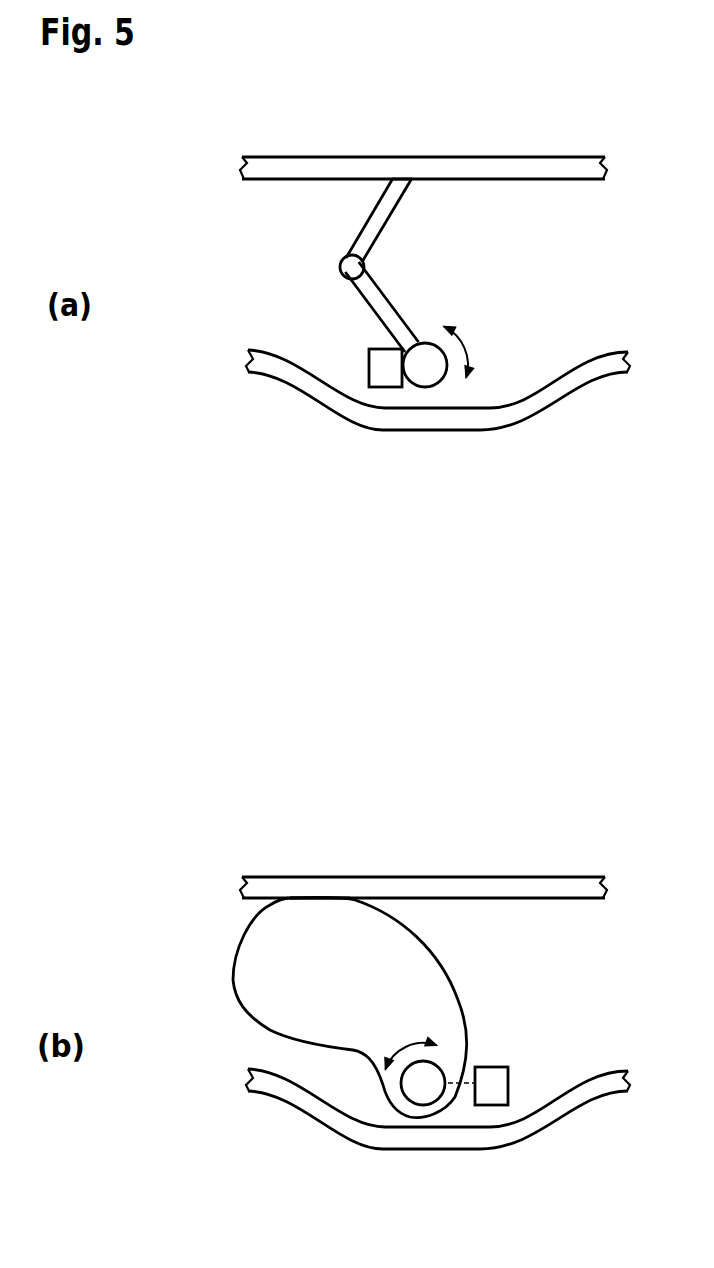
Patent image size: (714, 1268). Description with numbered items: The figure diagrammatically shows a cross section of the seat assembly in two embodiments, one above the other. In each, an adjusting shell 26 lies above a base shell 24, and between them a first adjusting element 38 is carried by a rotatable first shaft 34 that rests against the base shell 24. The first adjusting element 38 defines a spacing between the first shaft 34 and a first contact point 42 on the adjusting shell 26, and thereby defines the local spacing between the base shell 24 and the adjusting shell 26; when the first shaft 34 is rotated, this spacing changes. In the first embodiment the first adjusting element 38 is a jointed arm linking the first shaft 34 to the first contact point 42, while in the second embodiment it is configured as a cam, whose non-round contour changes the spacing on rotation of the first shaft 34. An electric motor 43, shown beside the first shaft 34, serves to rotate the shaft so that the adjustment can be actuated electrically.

In FIG. 5a, the base shell 24 is at (310, 378).
In FIG. 5b, the base shell 24 is at (310, 1097).
In FIG. 5a, the adjusting shell 26 is at (588, 163).
In FIG. 5b, the adjusting shell 26 is at (588, 883).
In FIG. 5a, the first shaft 34 is at (425, 375).
In FIG. 5b, the first shaft 34 is at (423, 1095).
In FIG. 5a, the first adjusting element 38 is at (372, 228).
In FIG. 5b, the first adjusting element 38 is at (235, 962).
In FIG. 5a, the first contact point 42 is at (405, 178).
In FIG. 5b, the first contact point 42 is at (317, 898).
In FIG. 5a, the electric motor 43 is at (382, 387).
In FIG. 5b, the electric motor 43 is at (487, 1105).